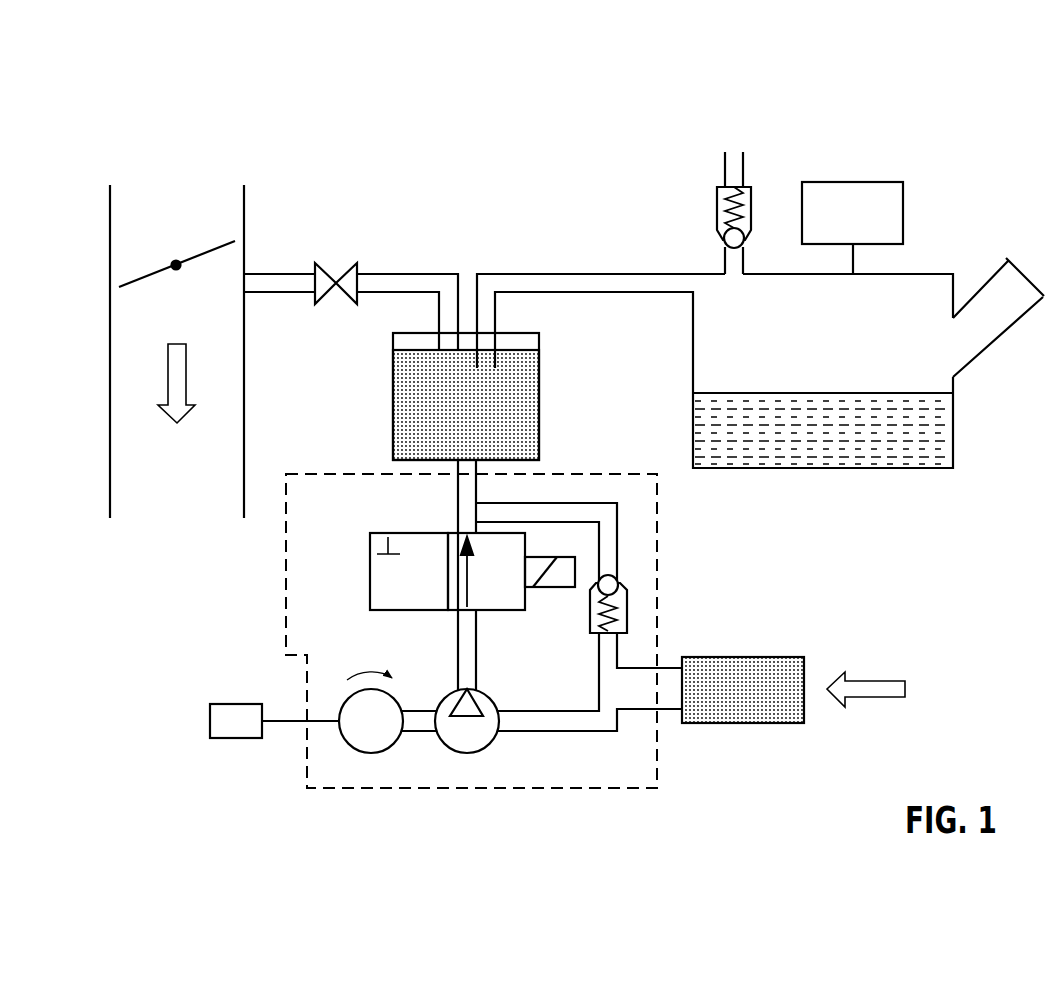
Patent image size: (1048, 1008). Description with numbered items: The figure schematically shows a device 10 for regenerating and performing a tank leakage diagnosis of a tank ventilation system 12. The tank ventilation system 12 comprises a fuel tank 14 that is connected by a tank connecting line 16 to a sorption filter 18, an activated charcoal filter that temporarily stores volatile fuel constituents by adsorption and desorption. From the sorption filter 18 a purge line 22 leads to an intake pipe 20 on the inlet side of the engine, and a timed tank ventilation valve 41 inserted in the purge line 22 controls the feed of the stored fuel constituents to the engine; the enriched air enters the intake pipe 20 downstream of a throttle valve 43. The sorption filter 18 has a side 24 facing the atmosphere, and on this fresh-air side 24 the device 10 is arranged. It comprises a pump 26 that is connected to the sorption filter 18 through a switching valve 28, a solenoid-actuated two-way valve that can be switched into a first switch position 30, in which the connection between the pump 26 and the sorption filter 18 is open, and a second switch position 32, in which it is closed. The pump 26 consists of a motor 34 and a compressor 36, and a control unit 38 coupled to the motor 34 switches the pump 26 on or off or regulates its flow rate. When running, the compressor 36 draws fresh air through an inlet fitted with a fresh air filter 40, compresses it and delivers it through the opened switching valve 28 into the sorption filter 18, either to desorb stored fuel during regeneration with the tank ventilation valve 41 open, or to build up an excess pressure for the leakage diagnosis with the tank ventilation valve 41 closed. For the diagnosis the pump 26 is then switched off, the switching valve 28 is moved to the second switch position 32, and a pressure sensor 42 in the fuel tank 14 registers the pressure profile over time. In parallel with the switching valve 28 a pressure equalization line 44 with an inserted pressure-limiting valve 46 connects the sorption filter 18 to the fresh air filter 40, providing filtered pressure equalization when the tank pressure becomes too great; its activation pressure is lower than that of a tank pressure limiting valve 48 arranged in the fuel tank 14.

The device 10 is at (250, 626).
The tank ventilation system 12 is at (900, 118).
The fuel tank 14 is at (913, 357).
The tank connecting line 16 is at (565, 283).
The sorption filter 18 is at (512, 402).
The intake pipe 20 is at (140, 369).
The purge line 22 is at (277, 283).
The side facing the atmosphere 24 is at (430, 458).
The pump 26 is at (455, 755).
The switching valve 28 is at (399, 571).
The first switch position 30 is at (511, 587).
The second switch position 32 is at (434, 587).
The motor 34 is at (370, 733).
The compressor 36 is at (466, 737).
The control unit 38 is at (238, 721).
The fresh air filter 40 is at (752, 683).
The tank ventilation valve 41 is at (348, 283).
The pressure sensor 42 is at (875, 212).
The throttle valve 43 is at (147, 275).
The pressure equalization line 44 is at (610, 540).
The pressure-limiting valve 46 is at (620, 592).
The tank pressure limiting valve 48 is at (717, 205).